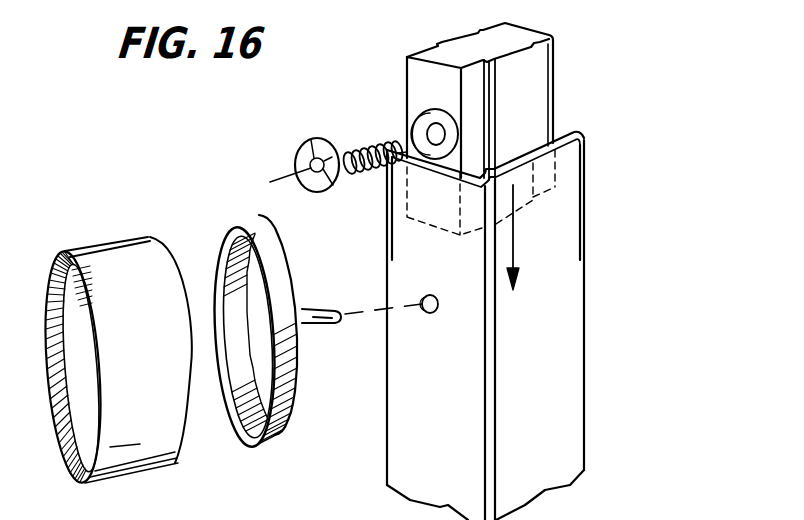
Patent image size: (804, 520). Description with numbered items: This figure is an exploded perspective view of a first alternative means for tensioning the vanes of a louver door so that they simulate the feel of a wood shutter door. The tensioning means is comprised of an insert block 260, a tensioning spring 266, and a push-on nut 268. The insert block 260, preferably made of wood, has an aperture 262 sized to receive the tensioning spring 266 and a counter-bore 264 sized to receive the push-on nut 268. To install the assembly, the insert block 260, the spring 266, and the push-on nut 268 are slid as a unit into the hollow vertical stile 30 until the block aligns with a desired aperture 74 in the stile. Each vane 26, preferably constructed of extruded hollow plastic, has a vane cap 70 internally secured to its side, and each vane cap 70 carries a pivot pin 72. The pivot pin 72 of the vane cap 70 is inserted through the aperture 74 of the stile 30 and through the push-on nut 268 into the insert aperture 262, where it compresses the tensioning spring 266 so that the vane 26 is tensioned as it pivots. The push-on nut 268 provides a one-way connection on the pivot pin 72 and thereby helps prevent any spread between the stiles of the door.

The vane 26 is at (107, 250).
The vane cap 70 is at (241, 226).
The pivot pin 72 is at (319, 307).
The aperture 74 is at (424, 313).
The vertical stile 30 is at (490, 326).
The insert block 260 is at (493, 129).
The aperture 262 is at (430, 135).
The counter-bore 264 is at (417, 114).
The tensioning spring 266 is at (368, 170).
The push-on nut 268 is at (298, 157).